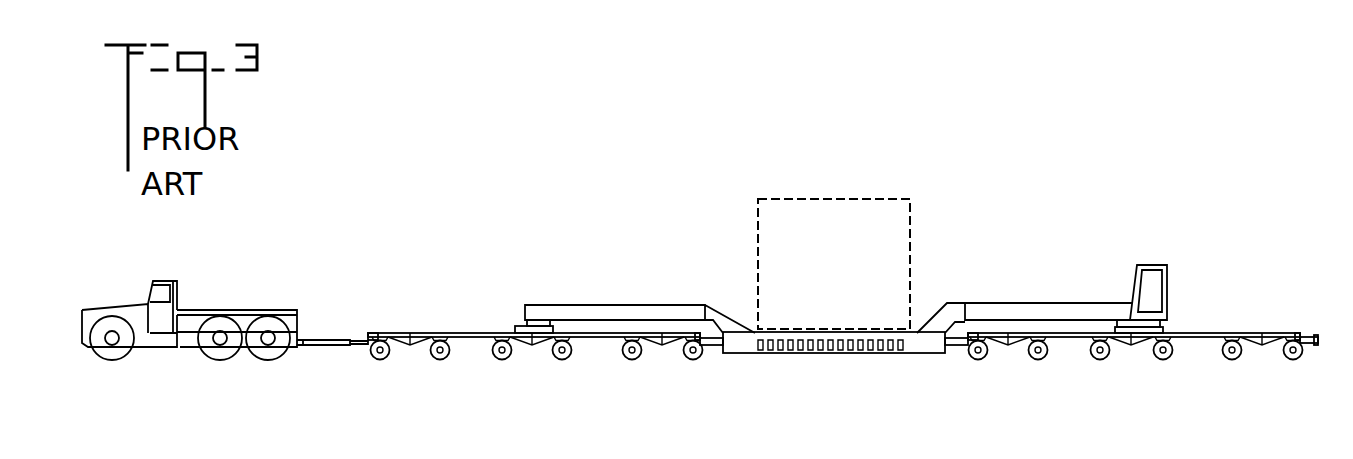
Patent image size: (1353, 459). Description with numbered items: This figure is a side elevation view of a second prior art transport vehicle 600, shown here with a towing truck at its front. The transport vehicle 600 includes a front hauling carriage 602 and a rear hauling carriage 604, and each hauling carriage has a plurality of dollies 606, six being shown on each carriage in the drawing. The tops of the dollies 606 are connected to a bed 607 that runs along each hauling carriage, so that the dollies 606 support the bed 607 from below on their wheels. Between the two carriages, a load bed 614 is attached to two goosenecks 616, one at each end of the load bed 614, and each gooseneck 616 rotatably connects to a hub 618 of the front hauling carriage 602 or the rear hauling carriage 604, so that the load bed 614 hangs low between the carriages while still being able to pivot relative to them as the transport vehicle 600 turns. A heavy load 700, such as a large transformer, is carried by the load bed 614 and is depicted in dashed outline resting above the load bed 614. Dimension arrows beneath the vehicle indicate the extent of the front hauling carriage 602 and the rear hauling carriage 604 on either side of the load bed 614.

The transport vehicle 600 is at (476, 243).
The front hauling carriage 602 is at (718, 379).
The rear hauling carriage 604 is at (1322, 378).
The dolly 606 is at (410, 342).
The bed 607 is at (452, 331).
The load bed 614 is at (786, 340).
The gooseneck 616 is at (688, 312).
The hub 618 is at (517, 325).
The heavy load 700 is at (927, 190).